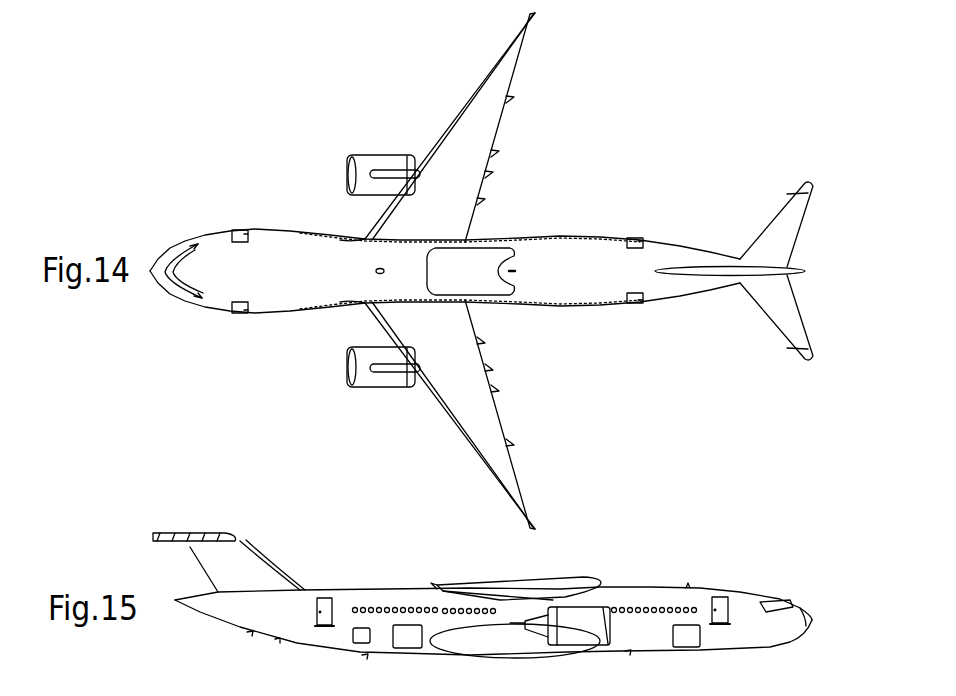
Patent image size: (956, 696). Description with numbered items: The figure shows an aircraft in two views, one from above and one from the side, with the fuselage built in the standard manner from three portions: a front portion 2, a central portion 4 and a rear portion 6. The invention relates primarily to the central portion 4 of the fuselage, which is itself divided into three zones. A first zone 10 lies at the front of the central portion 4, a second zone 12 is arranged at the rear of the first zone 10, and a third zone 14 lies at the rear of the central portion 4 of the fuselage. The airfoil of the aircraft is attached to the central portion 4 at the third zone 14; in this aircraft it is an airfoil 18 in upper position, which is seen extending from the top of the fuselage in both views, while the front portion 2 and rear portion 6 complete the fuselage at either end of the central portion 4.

In FIG. 14, the front portion 2 is at (157, 276).
In FIG. 15, the front portion 2 is at (813, 620).
In FIG. 15, the central portion 4 is at (387, 598).
In FIG. 14, the rear portion 6 is at (672, 287).
In FIG. 15, the rear portion 6 is at (220, 608).
In FIG. 14, the first zone 10 is at (212, 233).
In FIG. 14, the second zone 12 is at (289, 227).
In FIG. 14, the third zone 14 is at (528, 238).
In FIG. 14, the airfoil in upper position 18 is at (487, 124).
In FIG. 15, the airfoil in upper position 18 is at (548, 583).